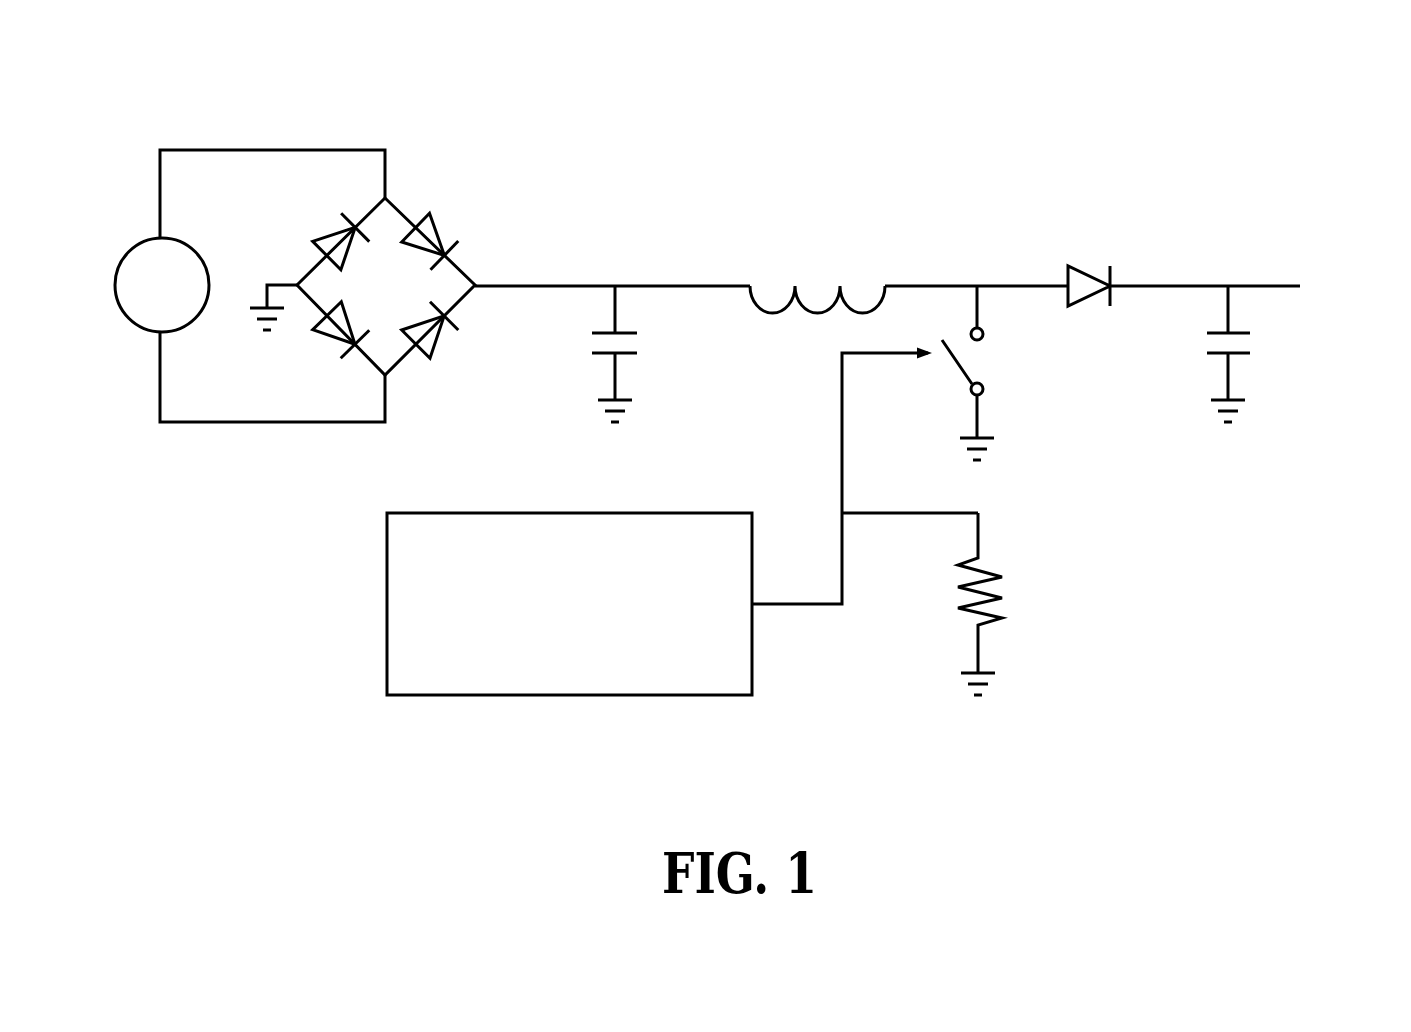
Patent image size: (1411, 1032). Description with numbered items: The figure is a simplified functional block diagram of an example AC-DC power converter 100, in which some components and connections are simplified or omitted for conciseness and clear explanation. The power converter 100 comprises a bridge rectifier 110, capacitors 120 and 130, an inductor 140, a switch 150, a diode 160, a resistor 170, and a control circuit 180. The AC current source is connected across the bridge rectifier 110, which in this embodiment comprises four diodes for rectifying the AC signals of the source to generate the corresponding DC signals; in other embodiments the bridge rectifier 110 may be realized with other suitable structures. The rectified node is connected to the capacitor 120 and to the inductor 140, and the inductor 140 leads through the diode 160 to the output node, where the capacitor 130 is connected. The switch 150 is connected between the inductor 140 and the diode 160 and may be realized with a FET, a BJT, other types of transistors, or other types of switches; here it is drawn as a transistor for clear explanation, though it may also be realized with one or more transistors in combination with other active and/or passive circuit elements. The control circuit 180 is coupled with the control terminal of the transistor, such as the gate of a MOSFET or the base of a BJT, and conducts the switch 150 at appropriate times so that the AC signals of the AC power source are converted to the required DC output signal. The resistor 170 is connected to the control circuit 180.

The power converter 100 is at (1212, 101).
The bridge rectifier 110 is at (419, 200).
The capacitor 120 is at (563, 340).
The capacitor 130 is at (1284, 350).
The inductor 140 is at (826, 266).
The switch 150 is at (1032, 363).
The diode 160 is at (1104, 266).
The resistor 170 is at (1032, 585).
The control circuit 180 is at (752, 652).